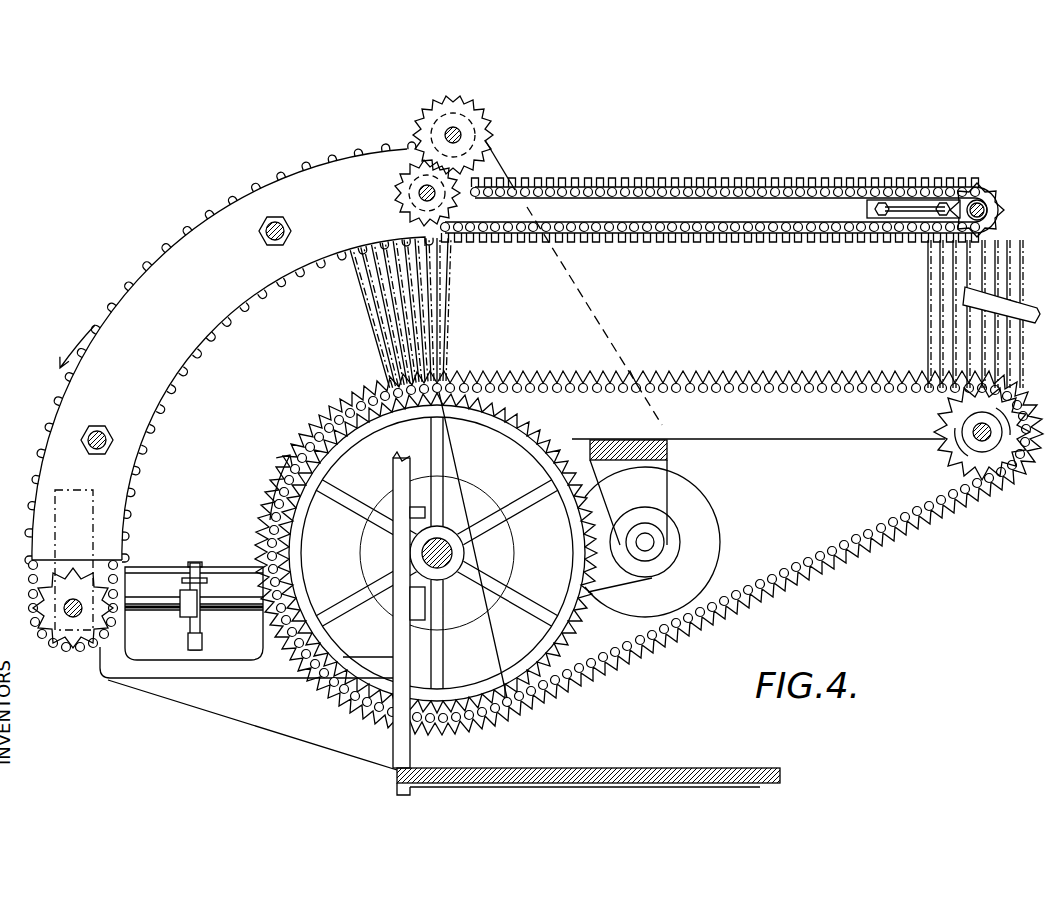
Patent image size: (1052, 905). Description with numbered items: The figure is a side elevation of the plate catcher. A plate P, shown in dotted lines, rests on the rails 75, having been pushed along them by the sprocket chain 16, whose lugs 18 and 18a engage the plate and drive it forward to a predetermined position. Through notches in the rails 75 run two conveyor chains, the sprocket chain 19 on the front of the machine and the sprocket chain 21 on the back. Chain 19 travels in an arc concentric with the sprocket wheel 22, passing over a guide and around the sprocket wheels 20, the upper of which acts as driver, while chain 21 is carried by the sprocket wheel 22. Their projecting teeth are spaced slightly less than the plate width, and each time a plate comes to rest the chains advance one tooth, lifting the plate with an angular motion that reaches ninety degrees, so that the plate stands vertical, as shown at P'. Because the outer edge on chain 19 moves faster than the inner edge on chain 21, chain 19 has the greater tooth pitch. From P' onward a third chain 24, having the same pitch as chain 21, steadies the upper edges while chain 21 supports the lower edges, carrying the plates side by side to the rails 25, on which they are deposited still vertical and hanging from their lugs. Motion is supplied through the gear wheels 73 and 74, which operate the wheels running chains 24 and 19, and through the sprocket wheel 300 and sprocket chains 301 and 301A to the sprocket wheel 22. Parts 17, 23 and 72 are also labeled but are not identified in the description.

The sprocket chain 16 is at (200, 566).
The pawl block 17 is at (200, 620).
The lug 18 is at (193, 560).
The lug 18a is at (202, 645).
The sprocket chain 19 is at (186, 370).
The sprocket wheels 20 is at (58, 640).
The sprocket chain 21 is at (310, 442).
The sprocket wheel 22 is at (545, 665).
The idler sprocket 23 is at (955, 446).
The sprocket chain 24 is at (690, 181).
The rails 25 is at (975, 296).
The gear shaft 72 is at (462, 135).
The gear wheel 73 is at (447, 100).
The gear wheel 74 is at (400, 185).
The rails 75 is at (130, 573).
The sprocket wheel 300 is at (470, 96).
The sprocket chain 301 is at (504, 182).
The sprocket chain 301A is at (492, 498).
The plate P is at (531, 398).
The plate in vertical position P' is at (443, 313).